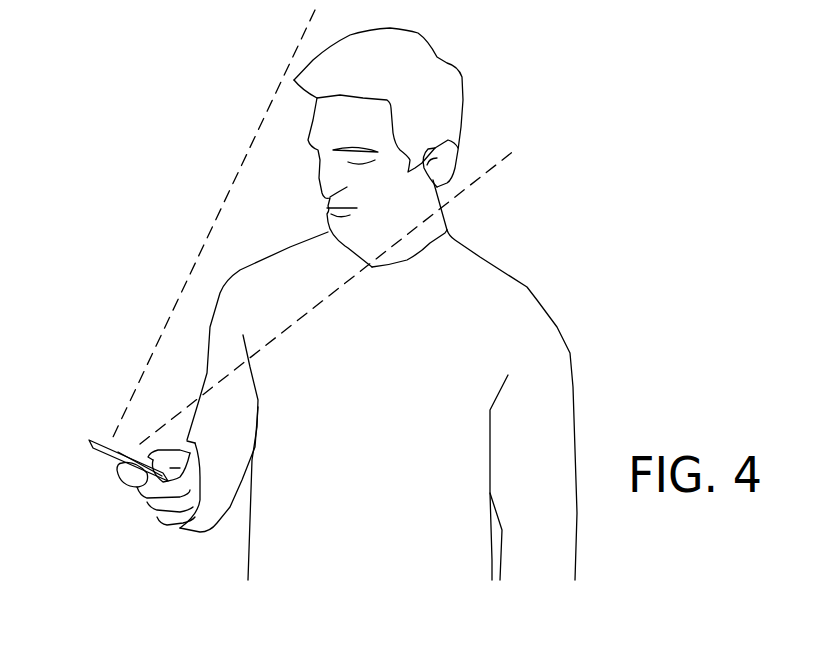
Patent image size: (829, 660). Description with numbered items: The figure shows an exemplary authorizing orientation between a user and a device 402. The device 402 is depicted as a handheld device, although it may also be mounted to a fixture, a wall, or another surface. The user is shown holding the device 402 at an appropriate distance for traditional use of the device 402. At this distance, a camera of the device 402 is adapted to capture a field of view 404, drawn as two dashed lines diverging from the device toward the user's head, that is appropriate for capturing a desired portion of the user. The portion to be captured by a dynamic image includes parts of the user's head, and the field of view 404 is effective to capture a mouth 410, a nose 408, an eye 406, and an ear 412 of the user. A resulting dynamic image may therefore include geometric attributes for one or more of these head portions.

The device 402 is at (102, 441).
The field of view 404 is at (183, 283).
The eye 406 is at (316, 163).
The nose 408 is at (316, 202).
The mouth 410 is at (330, 219).
The ear 412 is at (445, 132).